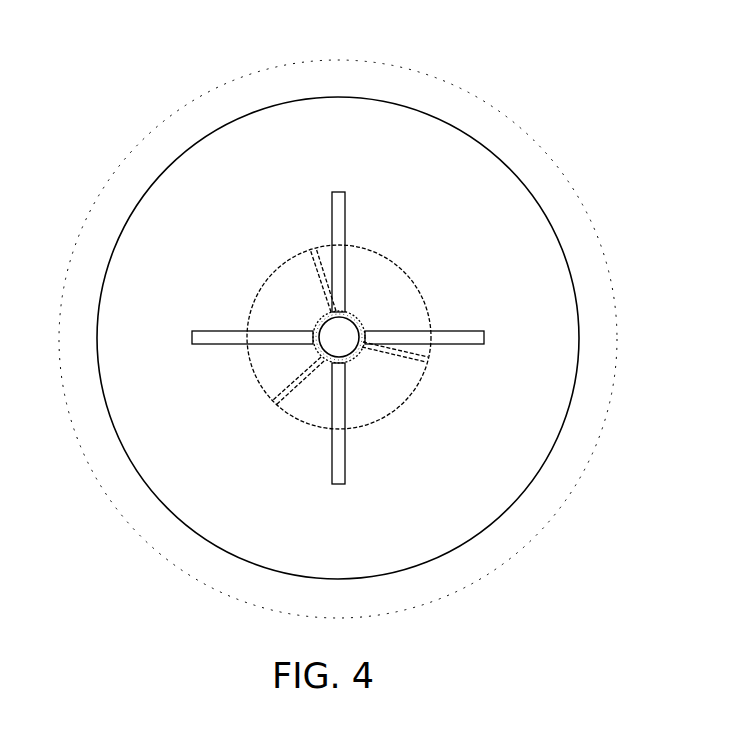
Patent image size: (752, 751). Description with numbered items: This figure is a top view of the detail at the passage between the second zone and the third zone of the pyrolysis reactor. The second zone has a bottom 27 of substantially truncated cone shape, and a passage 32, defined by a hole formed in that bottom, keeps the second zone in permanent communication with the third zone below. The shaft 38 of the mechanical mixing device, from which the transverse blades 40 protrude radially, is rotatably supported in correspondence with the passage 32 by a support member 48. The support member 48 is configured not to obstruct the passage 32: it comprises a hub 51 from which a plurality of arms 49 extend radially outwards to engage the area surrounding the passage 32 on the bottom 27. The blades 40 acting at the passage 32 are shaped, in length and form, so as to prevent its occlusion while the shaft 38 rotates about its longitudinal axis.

The bottom 27 is at (255, 168).
The passage 32 is at (297, 300).
The arms 49 is at (345, 220).
The support member 48 is at (350, 311).
The shaft 38 is at (342, 342).
The blades 40 is at (407, 354).
The hub 51 is at (355, 353).